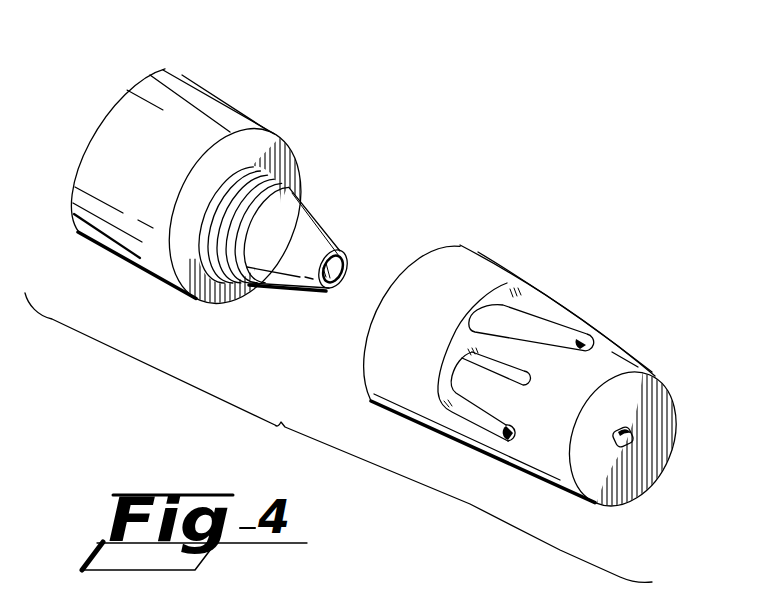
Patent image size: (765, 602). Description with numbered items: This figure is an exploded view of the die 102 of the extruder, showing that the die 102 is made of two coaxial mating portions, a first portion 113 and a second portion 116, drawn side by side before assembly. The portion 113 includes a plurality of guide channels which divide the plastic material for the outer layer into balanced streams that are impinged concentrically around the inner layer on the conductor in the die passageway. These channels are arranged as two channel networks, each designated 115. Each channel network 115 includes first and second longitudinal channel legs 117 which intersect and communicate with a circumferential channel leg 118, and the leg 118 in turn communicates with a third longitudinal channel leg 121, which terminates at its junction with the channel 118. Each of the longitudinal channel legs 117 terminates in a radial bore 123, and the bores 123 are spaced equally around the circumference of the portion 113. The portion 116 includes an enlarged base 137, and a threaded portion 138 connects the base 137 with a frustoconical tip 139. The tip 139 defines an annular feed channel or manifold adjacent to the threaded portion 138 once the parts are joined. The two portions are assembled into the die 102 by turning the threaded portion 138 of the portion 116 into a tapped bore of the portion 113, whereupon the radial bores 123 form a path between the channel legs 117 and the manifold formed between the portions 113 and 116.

The die 102 is at (338, 437).
The second coaxial mating portion 116 is at (234, 175).
The enlarged base 137 is at (125, 225).
The threaded portion 138 is at (272, 173).
The frustoconical tip 139 is at (300, 217).
The first coaxial mating portion 113 is at (530, 348).
The circumferential channel leg 118 is at (490, 306).
The channel network 115 is at (546, 294).
The longitudinal channel leg 117 is at (553, 322).
The third longitudinal channel leg 121 is at (532, 377).
The radial bore 123 is at (588, 337).